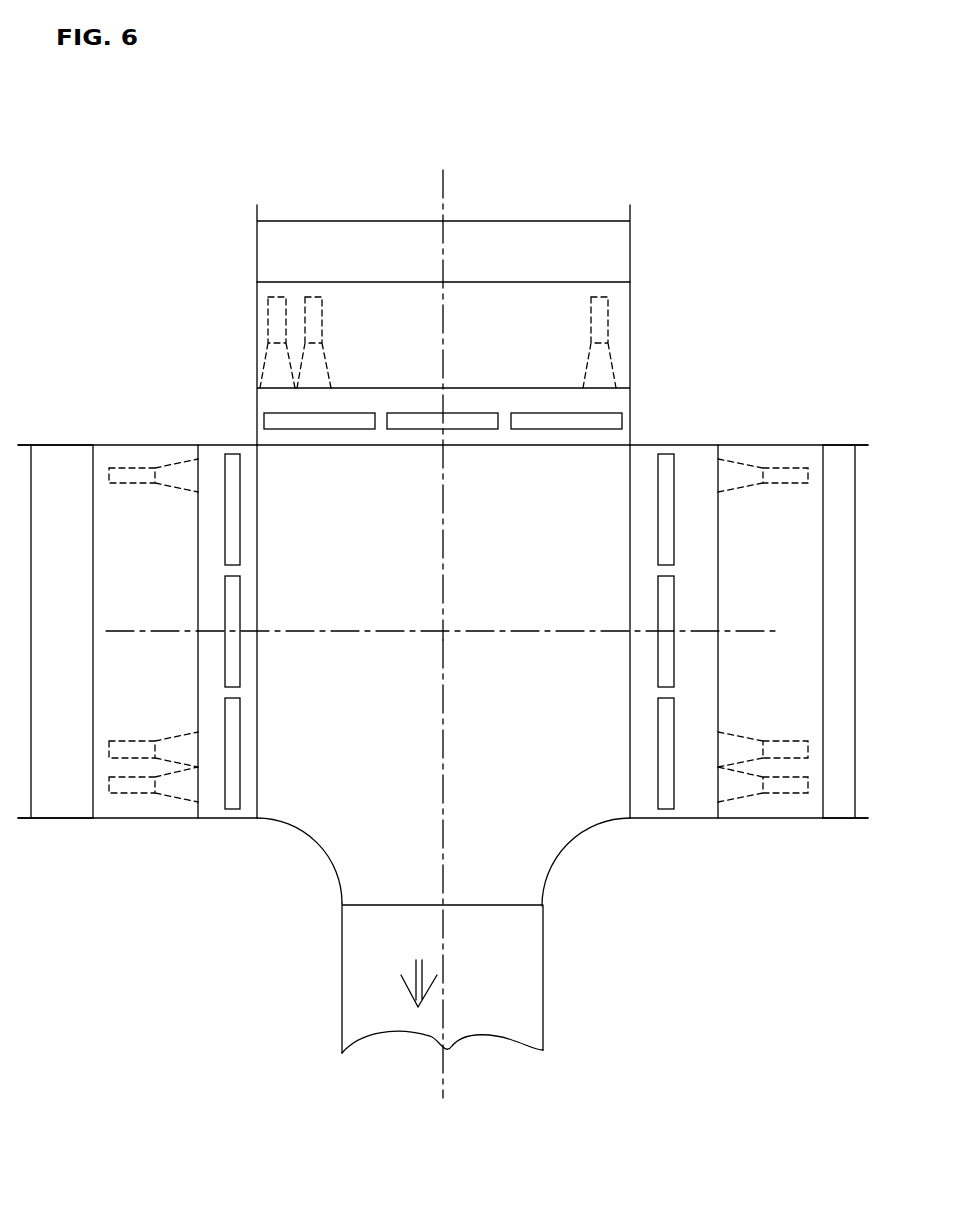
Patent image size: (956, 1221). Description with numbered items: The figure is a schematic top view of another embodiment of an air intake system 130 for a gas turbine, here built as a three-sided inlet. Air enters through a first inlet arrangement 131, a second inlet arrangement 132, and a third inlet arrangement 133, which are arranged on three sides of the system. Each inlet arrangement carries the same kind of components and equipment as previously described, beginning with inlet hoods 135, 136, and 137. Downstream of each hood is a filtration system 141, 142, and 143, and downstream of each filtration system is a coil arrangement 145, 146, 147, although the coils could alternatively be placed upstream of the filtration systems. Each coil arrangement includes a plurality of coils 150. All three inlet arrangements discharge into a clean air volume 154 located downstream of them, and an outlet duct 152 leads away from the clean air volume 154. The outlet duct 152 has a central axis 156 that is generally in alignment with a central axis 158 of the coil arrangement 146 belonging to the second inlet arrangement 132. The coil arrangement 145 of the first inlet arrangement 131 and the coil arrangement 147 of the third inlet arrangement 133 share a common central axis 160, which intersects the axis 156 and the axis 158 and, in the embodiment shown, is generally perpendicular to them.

The air intake system 130 is at (130, 257).
The first inlet arrangement 131 is at (56, 445).
The second inlet arrangement 132 is at (257, 282).
The third inlet arrangement 133 is at (798, 445).
The inlet hood 135 is at (60, 818).
The inlet hood 136 is at (630, 253).
The inlet hood 137 is at (833, 818).
The filtration system 141 is at (150, 445).
The filtration system 142 is at (614, 323).
The filtration system 143 is at (740, 455).
The coil arrangement 145 is at (243, 740).
The coil arrangement 146 is at (439, 431).
The coil arrangement 147 is at (656, 616).
The coils 150 is at (308, 429).
The outlet duct 152 is at (543, 1000).
The clean air volume 154 is at (318, 829).
The central axis 156 is at (444, 873).
The central axis 158 is at (443, 305).
The common central axis 160 is at (407, 632).